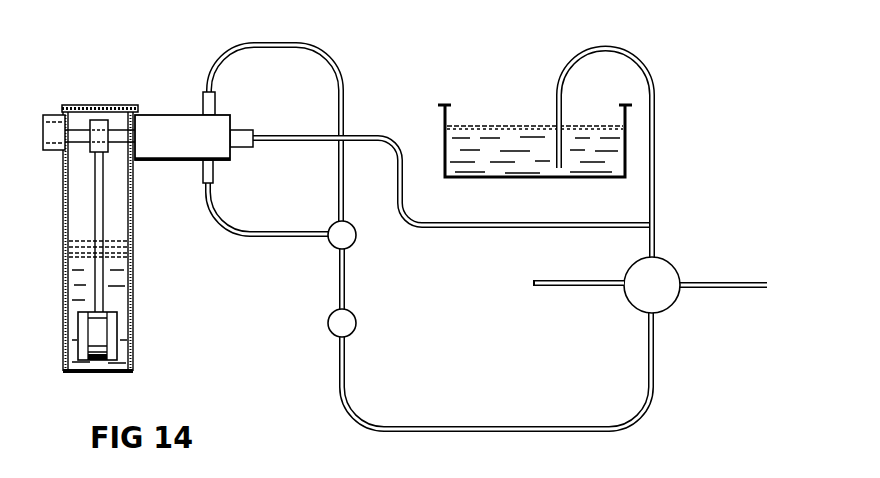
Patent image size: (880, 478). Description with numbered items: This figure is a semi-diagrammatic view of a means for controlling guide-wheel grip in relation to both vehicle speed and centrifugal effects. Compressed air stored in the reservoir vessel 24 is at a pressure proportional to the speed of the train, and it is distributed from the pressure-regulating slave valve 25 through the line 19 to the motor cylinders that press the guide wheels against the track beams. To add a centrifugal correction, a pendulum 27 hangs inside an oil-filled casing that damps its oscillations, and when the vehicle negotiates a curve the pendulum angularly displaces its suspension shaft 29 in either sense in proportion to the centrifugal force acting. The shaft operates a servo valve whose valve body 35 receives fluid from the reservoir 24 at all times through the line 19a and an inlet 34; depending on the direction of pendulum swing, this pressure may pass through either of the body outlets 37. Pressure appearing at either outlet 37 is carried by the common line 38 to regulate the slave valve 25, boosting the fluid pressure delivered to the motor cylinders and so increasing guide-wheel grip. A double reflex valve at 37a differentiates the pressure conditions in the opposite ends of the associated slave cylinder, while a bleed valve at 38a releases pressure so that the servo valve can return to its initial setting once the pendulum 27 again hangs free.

The line 19 is at (541, 281).
The line 19a is at (508, 219).
The reservoir vessel 24 is at (490, 105).
The pressure-regulating slave valve 25 is at (672, 272).
The pendulum 27 is at (102, 280).
The suspension shaft 29 is at (122, 130).
The inlet 34 is at (248, 134).
The valve body 35 is at (158, 115).
The body outlets 37 is at (215, 105).
The double reflex valve 37a is at (327, 240).
The common line 38 is at (424, 424).
The bleed valve 38a is at (357, 315).